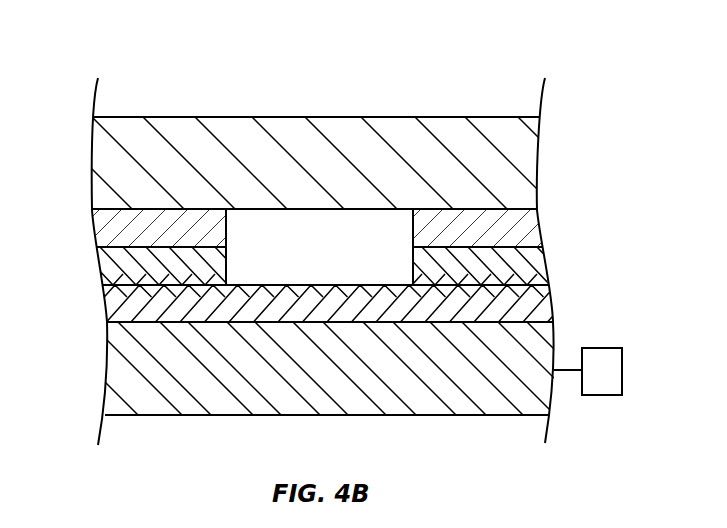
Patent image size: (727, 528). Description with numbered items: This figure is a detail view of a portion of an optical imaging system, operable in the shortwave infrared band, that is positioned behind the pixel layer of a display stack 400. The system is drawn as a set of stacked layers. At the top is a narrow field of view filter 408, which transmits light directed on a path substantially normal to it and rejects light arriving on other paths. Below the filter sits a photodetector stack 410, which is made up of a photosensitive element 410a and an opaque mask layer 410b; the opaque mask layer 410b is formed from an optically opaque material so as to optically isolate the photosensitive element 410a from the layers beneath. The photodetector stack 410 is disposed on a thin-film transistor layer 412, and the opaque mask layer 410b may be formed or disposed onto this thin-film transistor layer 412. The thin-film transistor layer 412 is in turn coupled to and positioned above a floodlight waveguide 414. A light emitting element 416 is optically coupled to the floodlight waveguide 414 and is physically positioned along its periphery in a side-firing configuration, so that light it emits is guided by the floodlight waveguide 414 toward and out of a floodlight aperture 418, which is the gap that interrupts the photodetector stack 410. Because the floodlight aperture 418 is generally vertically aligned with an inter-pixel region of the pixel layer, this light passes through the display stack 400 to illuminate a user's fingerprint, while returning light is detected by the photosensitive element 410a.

The display stack 400 is at (138, 60).
The narrow field of view filter 408 is at (538, 163).
The photodetector stack 410 is at (75, 285).
The photosensitive element 410a is at (537, 222).
The opaque mask layer 410b is at (546, 262).
The thin-film transistor layer 412 is at (553, 300).
The floodlight waveguide 414 is at (105, 362).
The light emitting element 416 is at (622, 370).
The floodlight aperture 418 is at (273, 222).